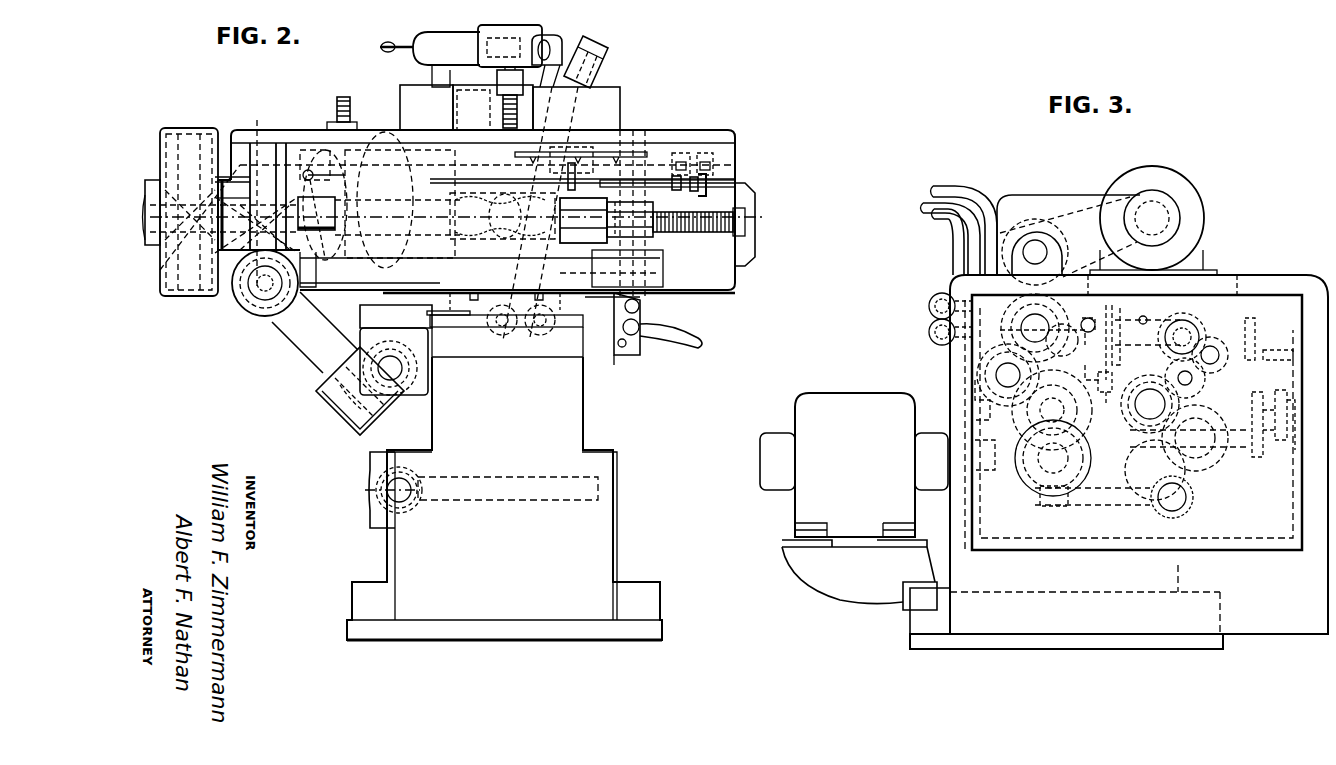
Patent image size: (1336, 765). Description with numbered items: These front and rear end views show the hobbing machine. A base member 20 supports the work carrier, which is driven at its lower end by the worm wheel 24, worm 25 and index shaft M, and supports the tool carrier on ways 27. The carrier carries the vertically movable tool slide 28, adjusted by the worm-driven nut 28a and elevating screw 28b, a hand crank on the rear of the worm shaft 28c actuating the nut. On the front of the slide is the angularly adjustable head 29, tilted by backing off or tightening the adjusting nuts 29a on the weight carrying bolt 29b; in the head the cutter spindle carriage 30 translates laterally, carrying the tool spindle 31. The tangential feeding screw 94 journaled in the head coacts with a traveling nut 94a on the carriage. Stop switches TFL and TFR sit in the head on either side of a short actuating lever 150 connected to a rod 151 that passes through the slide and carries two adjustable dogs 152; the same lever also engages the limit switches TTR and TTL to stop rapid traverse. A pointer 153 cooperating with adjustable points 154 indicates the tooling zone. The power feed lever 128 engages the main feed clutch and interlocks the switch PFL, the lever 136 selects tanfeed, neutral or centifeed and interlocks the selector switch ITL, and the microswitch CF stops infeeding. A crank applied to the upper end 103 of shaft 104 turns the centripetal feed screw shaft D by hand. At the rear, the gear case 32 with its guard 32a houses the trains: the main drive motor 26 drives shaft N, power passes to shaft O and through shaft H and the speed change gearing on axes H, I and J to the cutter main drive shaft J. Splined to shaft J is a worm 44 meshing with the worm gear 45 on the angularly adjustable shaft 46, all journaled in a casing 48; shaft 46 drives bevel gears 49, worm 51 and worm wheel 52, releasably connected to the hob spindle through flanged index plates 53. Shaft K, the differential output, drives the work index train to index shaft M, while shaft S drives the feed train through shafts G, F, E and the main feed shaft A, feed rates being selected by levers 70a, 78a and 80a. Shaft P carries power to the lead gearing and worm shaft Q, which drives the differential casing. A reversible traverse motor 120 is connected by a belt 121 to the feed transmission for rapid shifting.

In FIG. 2, the base member 20 is at (504, 498).
In FIG. 2, the worm wheel 24 is at (574, 502).
In FIG. 2, the worm 25 is at (408, 503).
In FIG. 3, the main drive motor 26 is at (855, 513).
In FIG. 2, the ways 27 is at (420, 314).
In FIG. 2, the tool slide 28 is at (398, 128).
In FIG. 2, the worm and worm wheel driven nut 28a is at (497, 80).
In FIG. 2, the elevating screw 28b is at (503, 100).
In FIG. 2, the worm shaft 28c is at (552, 35).
In FIG. 2, the angularly adjustable head 29 is at (425, 130).
In FIG. 2, the adjusting nuts 29a is at (330, 125).
In FIG. 2, the weight carrying bolt 29b is at (343, 97).
In FIG. 2, the cutter spindle supporting carriage 30 is at (455, 180).
In FIG. 2, the tool spindle 31 is at (450, 216).
In FIG. 3, the gear case 32 is at (1237, 470).
In FIG. 3, the gear case guard 32a is at (1099, 607).
In FIG. 2, the worm 44 is at (420, 378).
In FIG. 2, the worm gear 45 is at (345, 418).
In FIG. 2, the angularly adjustable shaft 46 is at (318, 350).
In FIG. 2, the casing 48 is at (320, 396).
In FIG. 2, the bevel gears 49 is at (222, 306).
In FIG. 2, the worm 51 is at (250, 300).
In FIG. 2, the worm wheel 52 is at (256, 140).
In FIG. 2, the flanged index plates 53 is at (190, 135).
In FIG. 3, the lever 70a is at (931, 190).
In FIG. 3, the balled lever 78a is at (936, 221).
In FIG. 3, the lever 80a is at (921, 208).
In FIG. 2, the tangential feeding screw 94 is at (745, 220).
In FIG. 2, the traveling nut 94a is at (640, 238).
In FIG. 2, the upper end of shaft 103 is at (596, 45).
In FIG. 2, the shaft 104 is at (598, 88).
In FIG. 3, the reversible motor 120 is at (1192, 204).
In FIG. 3, the belt connection 121 is at (1072, 210).
In FIG. 2, the actuating lever 128 is at (643, 293).
In FIG. 2, the lever 136 is at (700, 344).
In FIG. 2, the actuating lever 150 is at (700, 183).
In FIG. 2, the rod 151 is at (708, 190).
In FIG. 2, the dogs 152 is at (306, 170).
In FIG. 2, the pointer 153 is at (575, 165).
In FIG. 2, the adjustable points 154 is at (530, 152).
In FIG. 2, the main feed shaft A is at (540, 330).
In FIG. 2, the centripetal feed screw shaft D is at (502, 330).
In FIG. 3, the shaft E is at (1008, 375).
In FIG. 3, the parallel shaft F is at (1052, 410).
In FIG. 3, the shaft G is at (1053, 458).
In FIG. 3, the shaft H is at (1182, 331).
In FIG. 3, the axis I is at (1210, 355).
In FIG. 2, the cutter main drive shaft J is at (390, 368).
In FIG. 3, the output shaft K is at (1150, 404).
In FIG. 2, the index shaft M is at (382, 491).
In FIG. 3, the shaft N is at (1105, 392).
In FIG. 3, the continuing shaft O is at (1147, 323).
In FIG. 3, the shaft P is at (1282, 362).
In FIG. 3, the worm shaft Q is at (1190, 444).
In FIG. 3, the shaft S is at (1092, 505).
In FIG. 2, the limit switch TTL is at (680, 153).
In FIG. 2, the stop switch TFL is at (680, 160).
In FIG. 2, the limit switch TTR is at (705, 153).
In FIG. 2, the stop switch TFR is at (705, 160).
In FIG. 2, the switch PFL is at (638, 293).
In FIG. 2, the microswitch CF is at (626, 346).
In FIG. 2, the selector switch ITL is at (614, 360).